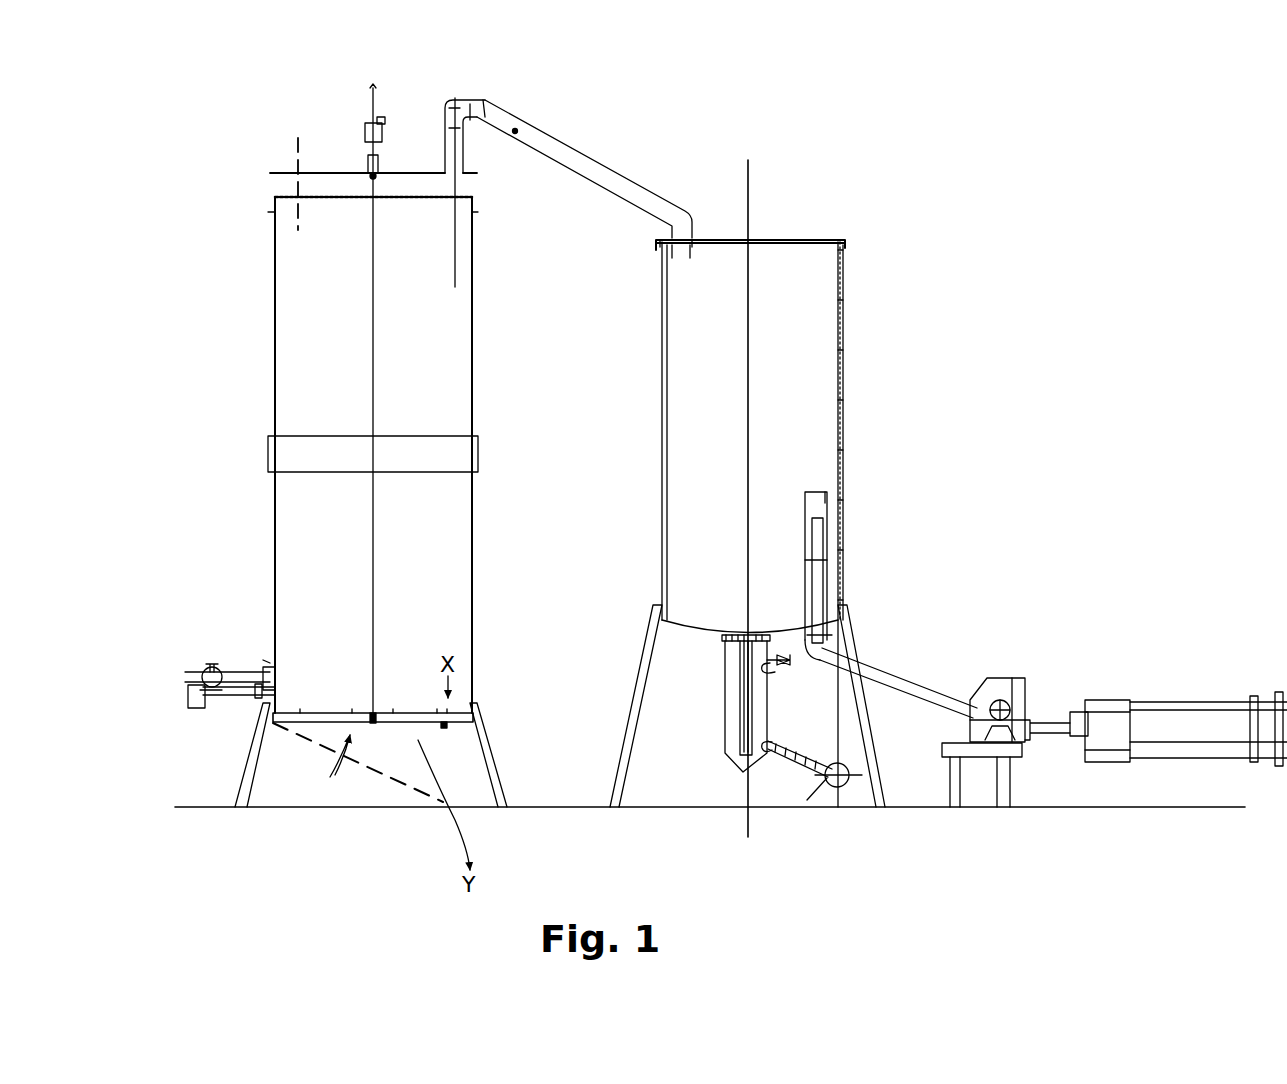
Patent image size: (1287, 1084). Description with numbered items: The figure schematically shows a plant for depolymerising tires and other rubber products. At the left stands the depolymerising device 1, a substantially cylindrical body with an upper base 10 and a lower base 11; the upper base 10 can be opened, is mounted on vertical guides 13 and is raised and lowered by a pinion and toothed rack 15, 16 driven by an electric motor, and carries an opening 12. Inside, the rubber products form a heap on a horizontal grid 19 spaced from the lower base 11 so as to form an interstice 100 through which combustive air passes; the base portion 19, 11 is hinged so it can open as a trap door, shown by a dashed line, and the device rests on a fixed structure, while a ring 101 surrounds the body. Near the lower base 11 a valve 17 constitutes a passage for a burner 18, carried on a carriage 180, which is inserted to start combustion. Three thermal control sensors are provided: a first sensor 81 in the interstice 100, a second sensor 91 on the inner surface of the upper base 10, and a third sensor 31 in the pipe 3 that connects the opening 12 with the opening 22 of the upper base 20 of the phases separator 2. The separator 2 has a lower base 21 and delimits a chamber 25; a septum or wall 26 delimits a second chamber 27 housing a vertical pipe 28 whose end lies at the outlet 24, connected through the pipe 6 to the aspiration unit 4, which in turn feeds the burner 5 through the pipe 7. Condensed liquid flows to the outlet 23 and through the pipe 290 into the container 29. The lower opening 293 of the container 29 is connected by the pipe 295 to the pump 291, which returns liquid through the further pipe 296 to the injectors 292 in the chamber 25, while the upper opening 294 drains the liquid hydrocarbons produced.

The depolymerising device 1 is at (246, 278).
The phases separator 2 is at (646, 422).
The pipe 3 is at (571, 160).
The aspiration unit 4 is at (1037, 672).
The burner 5 is at (1212, 678).
The pipe 6 is at (938, 690).
The pipe 7 is at (1052, 733).
The upper base 10 is at (410, 172).
The lower base 11 is at (412, 682).
The opening 12 is at (460, 177).
The vertical guides 13 is at (290, 142).
The pinion 15 is at (383, 124).
The toothed rack 16 is at (368, 98).
The valve 17 is at (281, 688).
The burner 18 is at (195, 716).
The horizontal grid 19 is at (330, 713).
The upper base 20 is at (718, 235).
The lower base 21 is at (690, 617).
The opening 22 is at (676, 250).
The outlet 23 is at (748, 636).
The outlet 24 is at (812, 624).
The chamber 25 is at (715, 498).
The septum or wall 26 is at (806, 507).
The second chamber 27 is at (826, 503).
The vertical pipe 28 is at (822, 542).
The container 29 is at (726, 767).
The thermal control sensor 31 is at (516, 130).
The thermal control sensor 81 is at (377, 725).
The thermal control sensor 91 is at (365, 181).
The interstice 100 is at (440, 728).
The support ring 101 is at (268, 449).
The carriage 180 is at (195, 657).
The pipe 290 is at (750, 718).
The pump 291 is at (852, 810).
The injectors or atomizers 292 is at (738, 385).
The lower opening 293 is at (772, 744).
The upper opening 294 is at (790, 672).
The pipe 295 is at (789, 787).
The pipe 296 is at (844, 382).